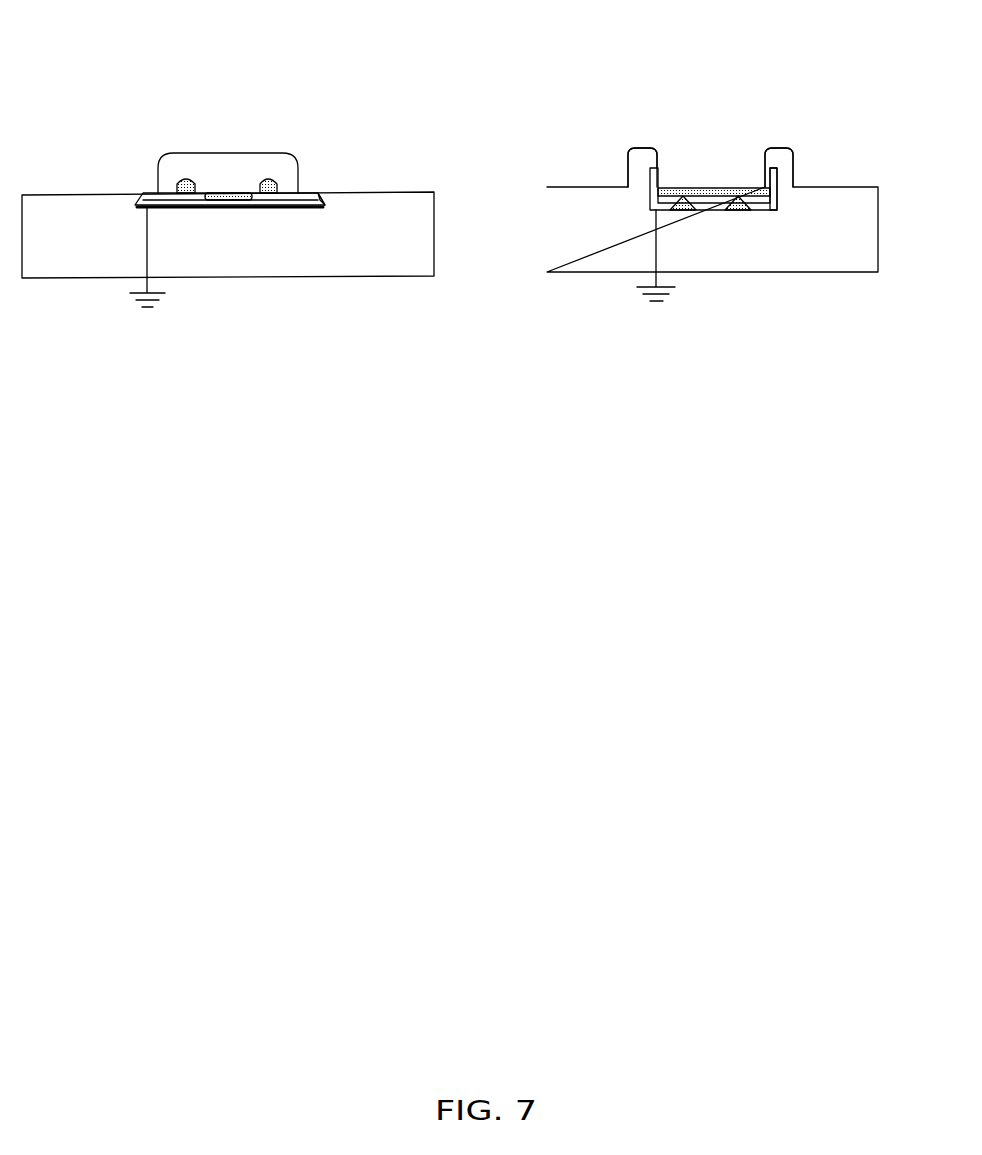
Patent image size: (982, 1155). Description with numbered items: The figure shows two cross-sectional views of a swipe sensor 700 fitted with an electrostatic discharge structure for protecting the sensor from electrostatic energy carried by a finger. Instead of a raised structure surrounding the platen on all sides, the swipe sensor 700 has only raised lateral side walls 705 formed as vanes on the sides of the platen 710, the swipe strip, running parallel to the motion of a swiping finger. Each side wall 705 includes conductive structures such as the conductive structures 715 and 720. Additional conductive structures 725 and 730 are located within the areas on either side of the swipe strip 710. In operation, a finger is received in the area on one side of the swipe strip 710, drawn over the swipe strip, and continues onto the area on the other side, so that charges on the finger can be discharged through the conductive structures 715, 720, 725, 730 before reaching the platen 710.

The swipe sensor 700 is at (198, 62).
The raised lateral side wall 705 is at (270, 152).
The platen 710 is at (227, 193).
The conductive structure 715 is at (190, 210).
The conductive structure 720 is at (270, 210).
The conductive structure 725 is at (137, 205).
The conductive structure 730 is at (320, 200).